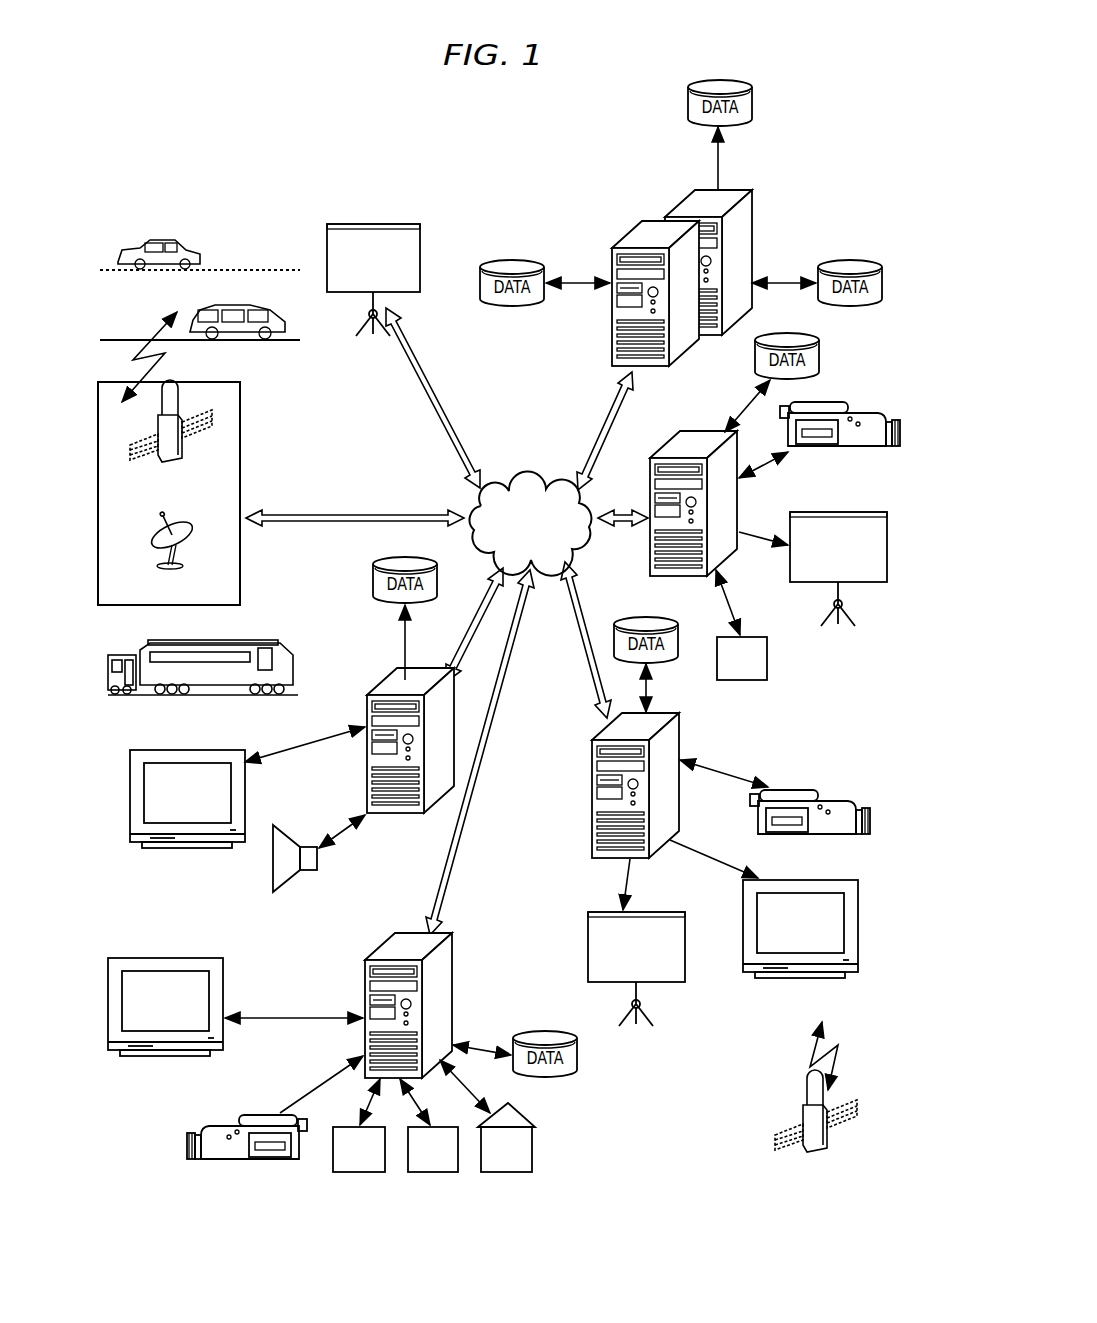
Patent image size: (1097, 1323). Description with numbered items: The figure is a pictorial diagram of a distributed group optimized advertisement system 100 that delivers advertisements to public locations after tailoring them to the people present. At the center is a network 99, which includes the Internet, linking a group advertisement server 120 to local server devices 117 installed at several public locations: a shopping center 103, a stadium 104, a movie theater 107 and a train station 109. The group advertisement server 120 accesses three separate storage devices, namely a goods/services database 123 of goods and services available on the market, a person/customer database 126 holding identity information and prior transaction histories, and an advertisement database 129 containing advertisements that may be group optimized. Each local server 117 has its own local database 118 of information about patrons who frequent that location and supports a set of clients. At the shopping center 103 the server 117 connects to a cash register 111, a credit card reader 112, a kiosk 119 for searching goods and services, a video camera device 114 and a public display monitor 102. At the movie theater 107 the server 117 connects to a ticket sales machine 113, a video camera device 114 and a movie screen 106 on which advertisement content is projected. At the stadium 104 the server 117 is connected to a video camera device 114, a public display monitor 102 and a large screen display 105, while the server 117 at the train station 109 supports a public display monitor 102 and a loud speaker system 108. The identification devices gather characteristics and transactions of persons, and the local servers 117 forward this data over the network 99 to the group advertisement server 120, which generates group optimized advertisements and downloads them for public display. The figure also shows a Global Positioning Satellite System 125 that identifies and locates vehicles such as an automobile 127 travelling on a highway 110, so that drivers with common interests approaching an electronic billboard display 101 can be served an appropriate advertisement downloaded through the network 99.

The network 99 is at (528, 478).
The distributed group optimized advertisement system 100 is at (338, 137).
The electronic billboard display 101 is at (343, 224).
The public display monitor 102 is at (160, 750).
The shopping center 103 is at (468, 922).
The stadium 104 is at (818, 760).
The large screen display 105 is at (587, 940).
The movie screen 106 is at (852, 588).
The movie theater 107 is at (838, 372).
The loud speaker system 108 is at (298, 882).
The train station 109 is at (318, 703).
The highway 110 is at (252, 282).
The cash register 111 is at (359, 1125).
The credit card reader 112 is at (429, 1125).
The ticket sales machine 113 is at (741, 625).
The video camera device 114 is at (848, 402).
The local server device 117 is at (700, 430).
The local database 118 is at (745, 365).
The kiosk 119 is at (487, 1116).
The group advertisement server 120 is at (752, 232).
The goods/services database 123 is at (490, 262).
The Global Positioning Satellite System 125 is at (245, 445).
The person/customer database 126 is at (755, 104).
The automobile 127 is at (190, 250).
The advertisement database 129 is at (848, 262).